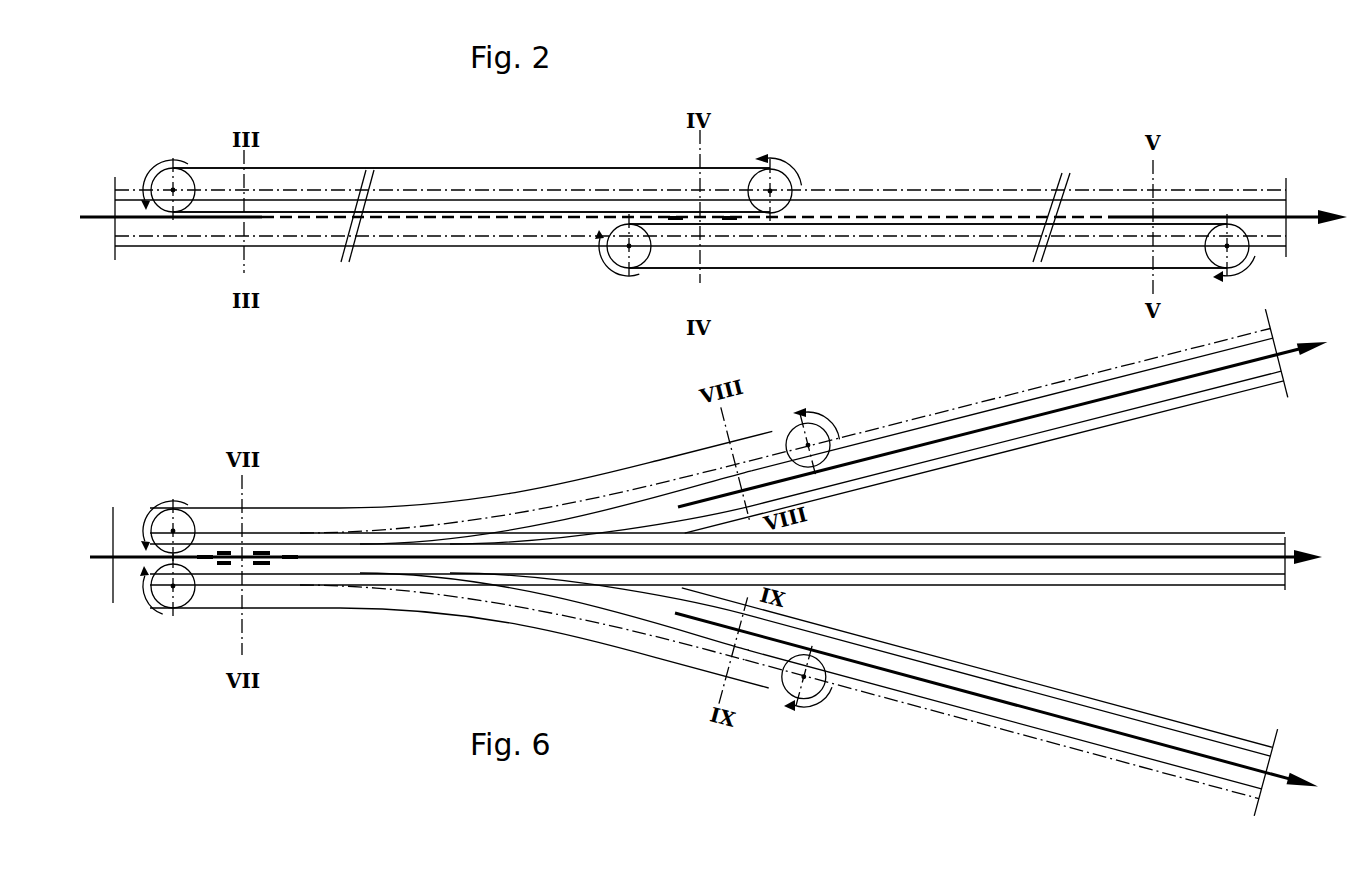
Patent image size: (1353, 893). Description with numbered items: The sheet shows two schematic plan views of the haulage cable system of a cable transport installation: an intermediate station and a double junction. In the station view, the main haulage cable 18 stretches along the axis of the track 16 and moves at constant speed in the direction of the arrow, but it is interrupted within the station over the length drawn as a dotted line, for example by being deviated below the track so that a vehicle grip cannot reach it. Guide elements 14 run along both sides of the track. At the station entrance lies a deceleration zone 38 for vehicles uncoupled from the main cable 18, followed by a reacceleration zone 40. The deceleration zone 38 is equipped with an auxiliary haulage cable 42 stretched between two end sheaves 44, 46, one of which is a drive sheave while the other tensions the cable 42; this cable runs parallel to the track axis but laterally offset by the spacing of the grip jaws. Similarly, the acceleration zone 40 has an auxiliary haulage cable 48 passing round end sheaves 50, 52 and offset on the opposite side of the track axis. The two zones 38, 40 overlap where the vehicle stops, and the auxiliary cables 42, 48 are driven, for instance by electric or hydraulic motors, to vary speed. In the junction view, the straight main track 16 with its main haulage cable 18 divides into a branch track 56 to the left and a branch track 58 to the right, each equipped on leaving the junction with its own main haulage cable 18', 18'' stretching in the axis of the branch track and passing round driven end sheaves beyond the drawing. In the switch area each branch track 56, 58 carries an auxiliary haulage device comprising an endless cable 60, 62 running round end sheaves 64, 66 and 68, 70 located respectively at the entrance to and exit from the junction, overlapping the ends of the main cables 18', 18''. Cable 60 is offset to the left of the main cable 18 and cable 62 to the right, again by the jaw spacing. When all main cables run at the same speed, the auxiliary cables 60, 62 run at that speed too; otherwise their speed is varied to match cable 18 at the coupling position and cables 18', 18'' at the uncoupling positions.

In FIG. 2, the guide plate 14 is at (984, 197).
In FIG. 6, the guide plate 14 is at (1181, 534).
In FIG. 2, the track 16 is at (144, 225).
In FIG. 6, the track 16 is at (1035, 575).
In FIG. 2, the main haulage cable 18 is at (713, 261).
In FIG. 6, the main haulage cable 18 is at (706, 599).
In FIG. 6, the main haulage cable of left branch track 18' is at (1002, 424).
In FIG. 6, the main haulage cable of right branch track 18'' is at (996, 712).
In FIG. 2, the deceleration zone 38 is at (466, 132).
In FIG. 2, the reacceleration zone 40 is at (936, 132).
In FIG. 2, the auxiliary haulage cable 42 is at (268, 211).
In FIG. 2, the end sheave 44 is at (162, 182).
In FIG. 2, the end sheave 46 is at (786, 168).
In FIG. 2, the auxiliary haulage cable 48 is at (822, 226).
In FIG. 2, the end sheave 50 is at (641, 262).
In FIG. 2, the end sheave 52 is at (1240, 270).
In FIG. 6, the branch track 56 is at (890, 440).
In FIG. 6, the branch track 58 is at (990, 706).
In FIG. 6, the endless cable 60 is at (395, 507).
In FIG. 6, the endless cable 62 is at (418, 610).
In FIG. 6, the end sheave 64 is at (160, 522).
In FIG. 6, the end sheave 66 is at (808, 424).
In FIG. 6, the end sheave 68 is at (165, 610).
In FIG. 6, the end sheave 70 is at (808, 706).